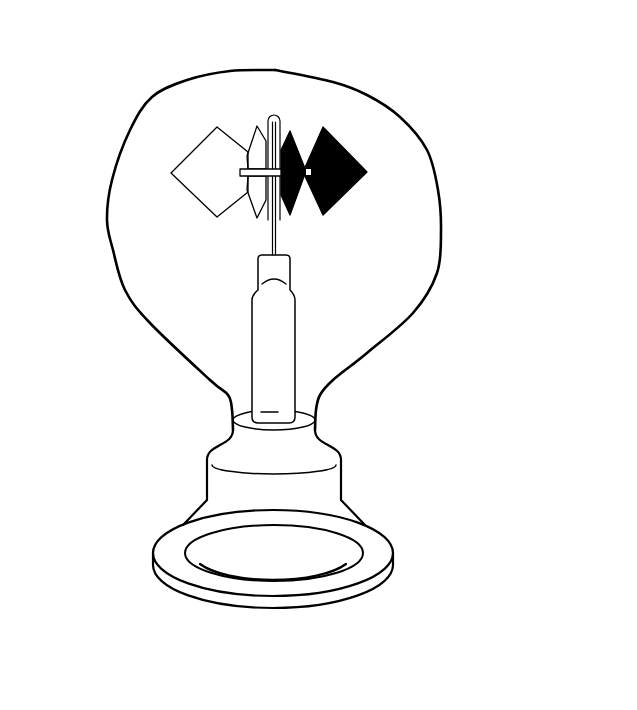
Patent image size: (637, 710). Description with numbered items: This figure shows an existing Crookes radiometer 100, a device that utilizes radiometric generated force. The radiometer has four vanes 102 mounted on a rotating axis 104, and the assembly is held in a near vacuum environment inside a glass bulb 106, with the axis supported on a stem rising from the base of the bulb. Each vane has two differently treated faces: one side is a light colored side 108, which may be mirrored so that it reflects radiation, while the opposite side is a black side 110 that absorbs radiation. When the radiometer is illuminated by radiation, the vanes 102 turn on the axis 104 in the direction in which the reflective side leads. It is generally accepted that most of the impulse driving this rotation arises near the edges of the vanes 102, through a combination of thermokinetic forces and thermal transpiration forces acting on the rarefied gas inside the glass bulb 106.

The Crookes radiometer 100 is at (112, 71).
The vanes 102 is at (362, 134).
The rotating axis 104 is at (270, 227).
The glass bulb 106 is at (436, 273).
The light colored side 108 is at (171, 173).
The black side 110 is at (333, 160).